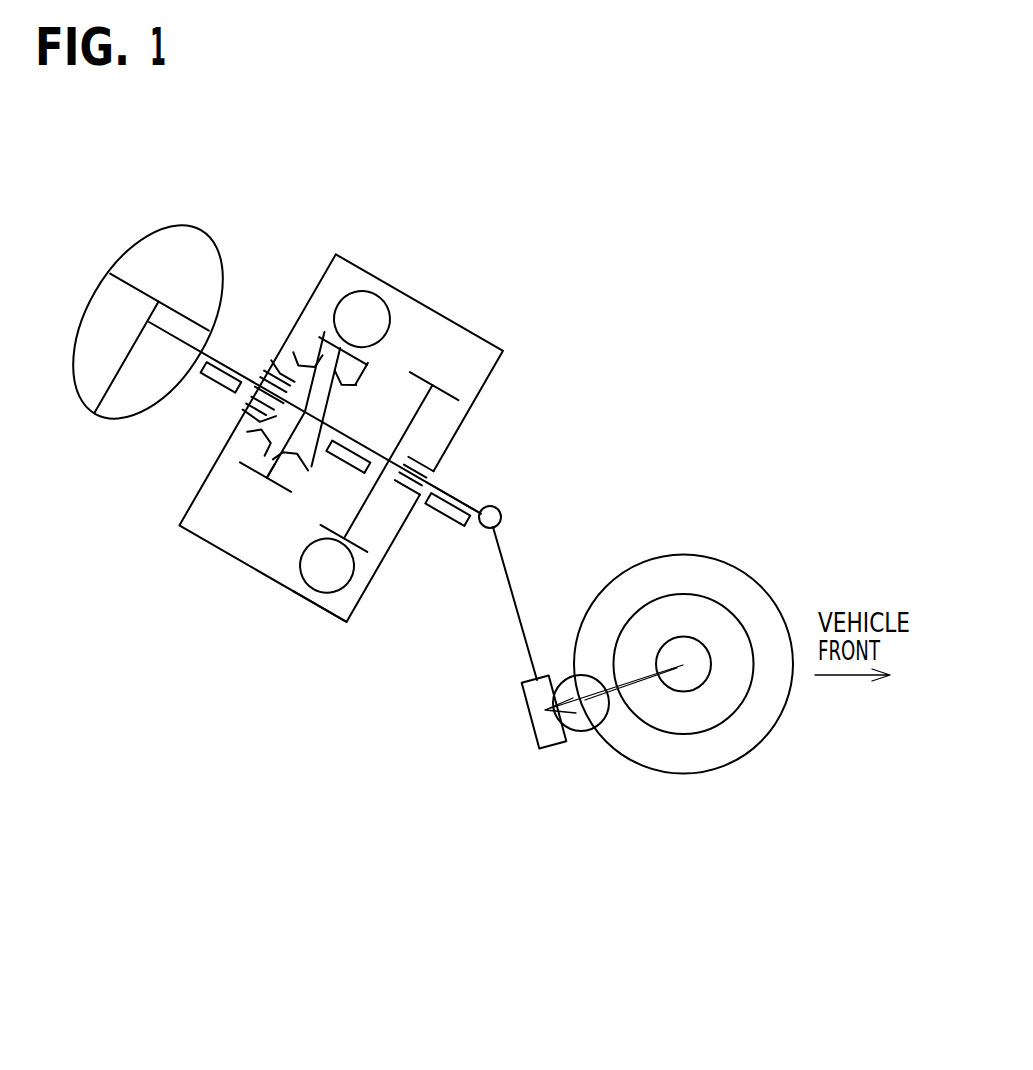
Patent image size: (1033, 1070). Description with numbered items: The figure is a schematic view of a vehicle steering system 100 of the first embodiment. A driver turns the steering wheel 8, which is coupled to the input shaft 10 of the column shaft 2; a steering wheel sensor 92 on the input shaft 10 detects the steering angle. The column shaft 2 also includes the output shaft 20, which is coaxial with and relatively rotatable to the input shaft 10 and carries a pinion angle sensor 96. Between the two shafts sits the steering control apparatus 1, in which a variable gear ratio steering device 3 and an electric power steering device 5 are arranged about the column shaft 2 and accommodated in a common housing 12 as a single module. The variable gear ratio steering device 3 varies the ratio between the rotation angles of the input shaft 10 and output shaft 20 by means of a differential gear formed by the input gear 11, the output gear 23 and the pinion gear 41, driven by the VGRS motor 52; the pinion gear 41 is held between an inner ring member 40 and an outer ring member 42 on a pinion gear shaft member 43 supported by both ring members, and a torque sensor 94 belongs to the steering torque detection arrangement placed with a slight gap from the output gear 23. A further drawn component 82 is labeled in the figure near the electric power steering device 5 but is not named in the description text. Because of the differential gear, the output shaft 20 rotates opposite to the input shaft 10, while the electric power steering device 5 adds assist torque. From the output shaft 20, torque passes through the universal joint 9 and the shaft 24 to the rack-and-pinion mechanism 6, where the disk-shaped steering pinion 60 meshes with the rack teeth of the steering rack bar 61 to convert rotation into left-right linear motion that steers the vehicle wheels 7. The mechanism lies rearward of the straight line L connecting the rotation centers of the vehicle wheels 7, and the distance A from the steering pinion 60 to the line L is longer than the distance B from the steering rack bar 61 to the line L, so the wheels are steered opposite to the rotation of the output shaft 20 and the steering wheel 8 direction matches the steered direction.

The steering system 100 is at (337, 790).
The steering wheel 8 is at (158, 228).
The input shaft 10 is at (226, 365).
The steering wheel sensor 92 is at (203, 390).
The input gear 11 is at (250, 432).
The inner ring member 40 is at (303, 400).
The pinion gear 41 is at (238, 430).
The outer ring member 42 is at (322, 337).
The pinion gear shaft member 43 is at (270, 440).
The VGRS motor 52 is at (380, 298).
The column shaft 2 is at (406, 366).
The output gear 23 is at (374, 434).
The electric power steering device 5 is at (459, 381).
The steering control apparatus 1 is at (512, 350).
The output shaft 20 is at (445, 471).
The shaft 24 is at (513, 600).
The distance A is at (566, 690).
The vehicle wheels 7 is at (747, 572).
The universal joint 9 is at (484, 527).
The pinion angle sensor 96 is at (440, 518).
The variable gear ratio steering device 3 is at (265, 494).
The torque sensor 94 is at (332, 470).
The motor 82 is at (306, 590).
The housing 12 is at (333, 618).
The rack-and-pinion mechanism 6 is at (527, 700).
The steering pinion 60 is at (532, 742).
The steering rack bar 61 is at (580, 732).
The distance B is at (672, 733).
The straight line L is at (688, 692).